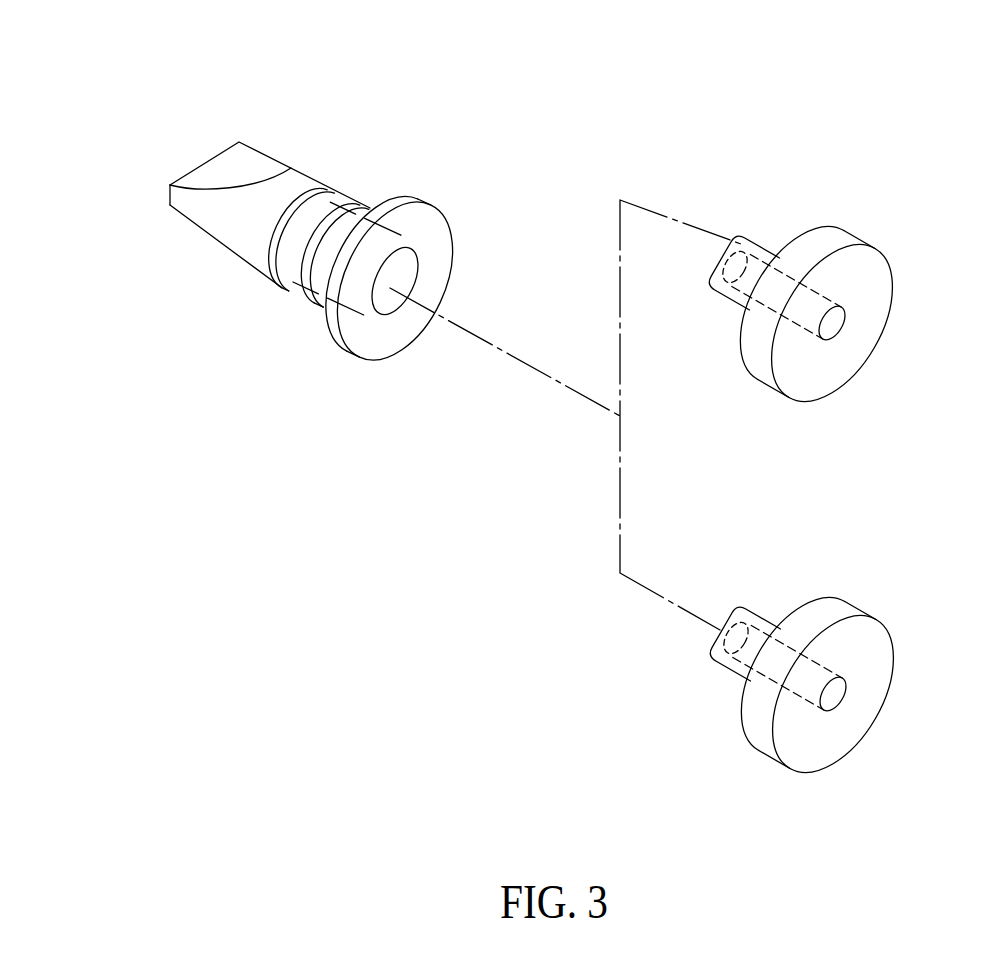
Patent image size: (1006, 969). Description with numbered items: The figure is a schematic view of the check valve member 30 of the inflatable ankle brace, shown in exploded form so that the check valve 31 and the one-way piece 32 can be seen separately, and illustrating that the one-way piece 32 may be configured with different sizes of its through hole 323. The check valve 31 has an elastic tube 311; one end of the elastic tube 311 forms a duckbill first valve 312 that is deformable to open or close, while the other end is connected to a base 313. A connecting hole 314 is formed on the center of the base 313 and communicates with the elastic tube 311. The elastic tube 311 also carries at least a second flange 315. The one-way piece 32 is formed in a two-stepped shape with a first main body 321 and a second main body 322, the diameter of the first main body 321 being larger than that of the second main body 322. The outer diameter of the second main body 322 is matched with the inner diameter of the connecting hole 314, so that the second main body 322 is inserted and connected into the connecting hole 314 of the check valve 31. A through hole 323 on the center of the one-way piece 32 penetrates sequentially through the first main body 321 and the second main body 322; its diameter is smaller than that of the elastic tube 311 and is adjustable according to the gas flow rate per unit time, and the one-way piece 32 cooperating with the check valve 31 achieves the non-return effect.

The check valve member 30 is at (198, 142).
The check valve 31 is at (447, 218).
The elastic tube 311 is at (298, 177).
The duckbill first valve 312 is at (170, 187).
The base 313 is at (333, 335).
The connecting hole 314 is at (413, 284).
The second flange 315 is at (303, 285).
The one-way piece 32 is at (757, 383).
The first main body 321 is at (837, 240).
The second main body 322 is at (744, 239).
The through hole 323 is at (838, 325).